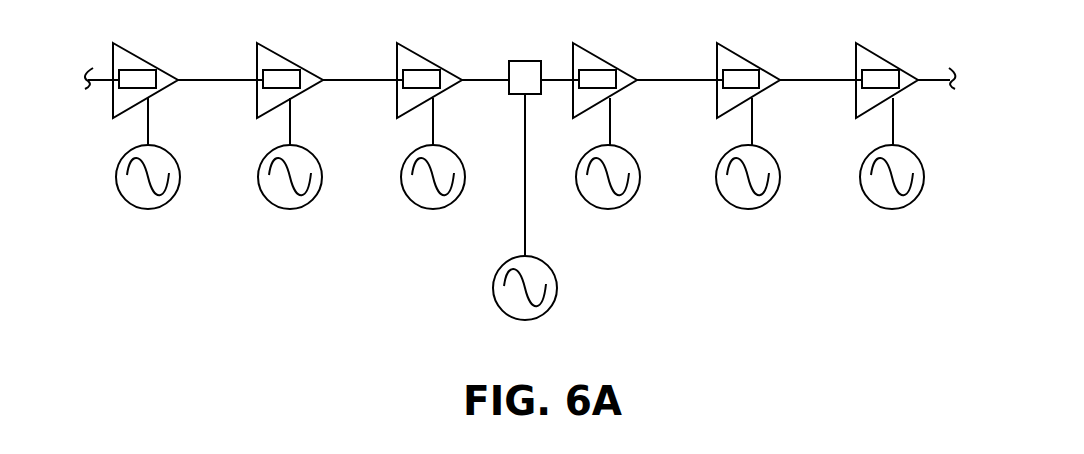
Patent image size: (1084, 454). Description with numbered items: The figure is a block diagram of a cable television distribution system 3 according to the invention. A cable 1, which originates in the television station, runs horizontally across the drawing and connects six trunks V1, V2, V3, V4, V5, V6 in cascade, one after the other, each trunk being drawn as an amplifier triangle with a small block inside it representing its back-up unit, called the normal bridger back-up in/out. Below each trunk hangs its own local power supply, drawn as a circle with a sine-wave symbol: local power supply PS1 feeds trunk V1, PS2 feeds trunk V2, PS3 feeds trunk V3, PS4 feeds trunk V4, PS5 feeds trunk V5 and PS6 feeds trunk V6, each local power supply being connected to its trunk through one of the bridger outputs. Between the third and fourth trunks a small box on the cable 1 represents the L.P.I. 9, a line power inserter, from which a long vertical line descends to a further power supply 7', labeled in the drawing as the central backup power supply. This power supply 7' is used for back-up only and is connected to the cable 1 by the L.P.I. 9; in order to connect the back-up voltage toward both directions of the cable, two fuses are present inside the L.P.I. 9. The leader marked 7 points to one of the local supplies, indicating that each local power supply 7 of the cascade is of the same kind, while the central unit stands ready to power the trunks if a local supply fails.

The cable 1 is at (104, 81).
The system 3 is at (288, 64).
The local power supply 7 is at (267, 180).
The power supply 7' is at (531, 305).
The L.P.I. 9 is at (525, 60).
The trunk V1 is at (145, 37).
The trunk V2 is at (292, 37).
The trunk V3 is at (429, 37).
The trunk V4 is at (611, 37).
The trunk V5 is at (753, 37).
The trunk V6 is at (896, 37).
The local power supply PS1 is at (175, 207).
The local power supply PS2 is at (310, 207).
The local power supply PS3 is at (456, 207).
The local power supply PS4 is at (634, 207).
The local power supply PS5 is at (773, 207).
The local power supply PS6 is at (916, 207).